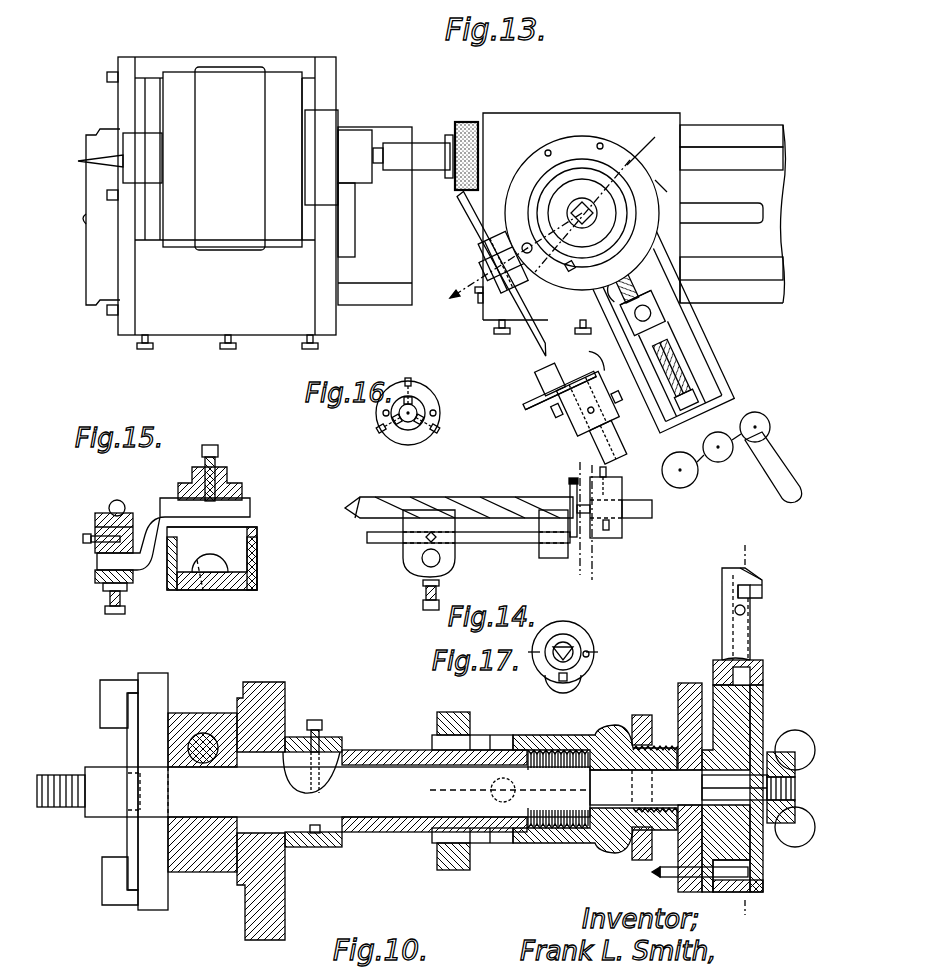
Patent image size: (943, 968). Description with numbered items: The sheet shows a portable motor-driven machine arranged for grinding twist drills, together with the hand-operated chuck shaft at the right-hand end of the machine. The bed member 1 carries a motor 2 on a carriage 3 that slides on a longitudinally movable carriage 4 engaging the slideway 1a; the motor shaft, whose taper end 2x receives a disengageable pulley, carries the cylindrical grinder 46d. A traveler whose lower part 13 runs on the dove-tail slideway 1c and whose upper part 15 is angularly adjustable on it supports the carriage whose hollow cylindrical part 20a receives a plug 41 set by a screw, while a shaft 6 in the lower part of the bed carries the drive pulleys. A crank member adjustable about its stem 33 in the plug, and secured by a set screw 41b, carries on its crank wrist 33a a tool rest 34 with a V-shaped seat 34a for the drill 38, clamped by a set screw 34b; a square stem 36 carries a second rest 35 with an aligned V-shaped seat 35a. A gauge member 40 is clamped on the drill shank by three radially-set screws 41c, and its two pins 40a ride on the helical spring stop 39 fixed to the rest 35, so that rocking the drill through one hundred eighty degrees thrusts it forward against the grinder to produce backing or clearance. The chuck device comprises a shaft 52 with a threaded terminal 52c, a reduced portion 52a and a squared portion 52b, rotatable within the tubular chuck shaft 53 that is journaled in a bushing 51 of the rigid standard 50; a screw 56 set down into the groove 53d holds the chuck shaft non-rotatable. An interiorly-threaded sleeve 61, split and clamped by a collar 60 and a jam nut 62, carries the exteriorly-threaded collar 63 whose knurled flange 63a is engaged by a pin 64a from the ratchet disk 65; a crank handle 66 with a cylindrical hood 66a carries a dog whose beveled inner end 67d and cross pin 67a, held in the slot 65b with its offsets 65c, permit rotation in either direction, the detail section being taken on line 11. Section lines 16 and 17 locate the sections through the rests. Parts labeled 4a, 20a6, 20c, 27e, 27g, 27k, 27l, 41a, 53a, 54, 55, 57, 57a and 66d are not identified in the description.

In FIG. 13, the bed member 1 is at (378, 263).
In FIG. 13, the slideway 1a is at (380, 128).
In FIG. 13, the dove-tail slideway 1c is at (752, 128).
In FIG. 13, the motor 2 is at (228, 116).
In FIG. 13, the taper end of the motor shaft 2x is at (78, 161).
In FIG. 13, the carriage 3 is at (152, 88).
In FIG. 13, the longitudinally movable carriage 4 is at (192, 328).
In FIG. 16, the hole 4a is at (383, 414).
In FIG. 13, the shaft 6 is at (82, 222).
In FIG. 10, the section line 11 is at (752, 538).
In FIG. 13, the lower part of traveler 13 is at (672, 118).
In FIG. 13, the upper part of traveler 15 is at (455, 323).
In FIG. 13, the section line 16 is at (606, 456).
In FIG. 14, the section line 16 is at (608, 570).
In FIG. 13, the section line 17 is at (690, 378).
In FIG. 14, the section line 17 is at (578, 458).
In FIG. 15, the hollow cylindrical part 20a is at (257, 578).
In FIG. 13, the guide bar 20a6 is at (748, 196).
In FIG. 13, the pivot pin 20c is at (568, 272).
In FIG. 15, the pivot pin 20c is at (201, 590).
In FIG. 13, the slide 27e is at (700, 326).
In FIG. 13, the clamp screw 27g is at (628, 284).
In FIG. 13, the slide block 27k is at (650, 313).
In FIG. 13, the slide plate 27l is at (648, 292).
In FIG. 13, the stem of crank member 33 is at (630, 167).
In FIG. 15, the stem of crank member 33 is at (250, 508).
In FIG. 13, the crank wrist 33a is at (480, 325).
In FIG. 15, the crank wrist 33a is at (98, 575).
In FIG. 14, the crank wrist 33a is at (425, 562).
In FIG. 13, the tool rest 34 is at (485, 255).
In FIG. 15, the tool rest 34 is at (95, 525).
In FIG. 14, the tool rest 34 is at (405, 550).
In FIG. 13, the V-shaped seat 34a is at (478, 268).
In FIG. 15, the V-shaped seat 34a is at (135, 515).
In FIG. 15, the set screw 34b is at (112, 615).
In FIG. 14, the set screw 34b is at (423, 605).
In FIG. 13, the second rest 35 is at (540, 378).
In FIG. 14, the second rest 35 is at (550, 558).
In FIG. 17, the second rest 35 is at (550, 683).
In FIG. 13, the V-shaped seat 35a is at (552, 388).
In FIG. 17, the V-shaped seat 35a is at (565, 640).
In FIG. 15, the square stem 36 is at (100, 543).
In FIG. 14, the square stem 36 is at (510, 543).
In FIG. 17, the square stem 36 is at (558, 677).
In FIG. 13, the twist drill 38 is at (458, 205).
In FIG. 16, the twist drill 38 is at (400, 425).
In FIG. 15, the twist drill 38 is at (110, 503).
In FIG. 14, the twist drill 38 is at (470, 505).
In FIG. 17, the twist drill 38 is at (553, 645).
In FIG. 13, the helical spring stop 39 is at (585, 375).
In FIG. 14, the helical spring stop 39 is at (568, 488).
In FIG. 17, the helical spring stop 39 is at (588, 636).
In FIG. 13, the gauge member 40 is at (572, 422).
In FIG. 16, the gauge member 40 is at (418, 442).
In FIG. 14, the gauge member 40 is at (622, 532).
In FIG. 13, the pins 40a is at (505, 440).
In FIG. 16, the pins 40a is at (435, 410).
In FIG. 14, the pins 40a is at (600, 508).
In FIG. 13, the plug 41 is at (560, 205).
In FIG. 15, the plug 41 is at (242, 528).
In FIG. 14, the set screw 41a is at (612, 526).
In FIG. 13, the set screw 41b is at (582, 200).
In FIG. 15, the set screw 41b is at (215, 460).
In FIG. 13, the radially-set screws 41c is at (618, 428).
In FIG. 16, the radially-set screws 41c is at (452, 440).
In FIG. 14, the radially-set screws 41c is at (607, 470).
In FIG. 13, the cylindrical grinder 46d is at (467, 122).
In FIG. 10, the rigid standard 50 is at (285, 917).
In FIG. 10, the bushing 51 is at (283, 732).
In FIG. 10, the shaft 52 is at (388, 775).
In FIG. 10, the reduced portion 52a is at (602, 792).
In FIG. 10, the squared portion 52b is at (712, 792).
In FIG. 10, the threaded terminal 52c is at (65, 808).
In FIG. 10, the tubular chuck shaft 53 is at (345, 755).
In FIG. 10, the hub 53a is at (205, 875).
In FIG. 10, the groove 53d is at (318, 833).
In FIG. 10, the plate 54 is at (158, 680).
In FIG. 10, the pin 55 is at (200, 735).
In FIG. 10, the screw 56 is at (320, 722).
In FIG. 10, the bracket 57 is at (128, 743).
In FIG. 10, the bracket arm 57a is at (105, 876).
In FIG. 10, the collar 60 is at (448, 712).
In FIG. 10, the interiorly-threaded sleeve 61 is at (545, 748).
In FIG. 10, the jam nut 62 is at (642, 715).
In FIG. 10, the exteriorly-threaded collar 63 is at (600, 835).
In FIG. 10, the knurled flange 63a is at (688, 683).
In FIG. 10, the pin 64a is at (660, 872).
In FIG. 10, the ratchet disk 65 is at (752, 705).
In FIG. 10, the slot 65b is at (768, 590).
In FIG. 10, the longitudinal offsets 65c is at (736, 595).
In FIG. 10, the crank handle member 66 is at (752, 575).
In FIG. 10, the cylindrical hood 66a is at (762, 745).
In FIG. 10, the foot 66d is at (763, 890).
In FIG. 10, the cross pin 67a is at (735, 612).
In FIG. 10, the inner end of the dog 67d is at (745, 678).